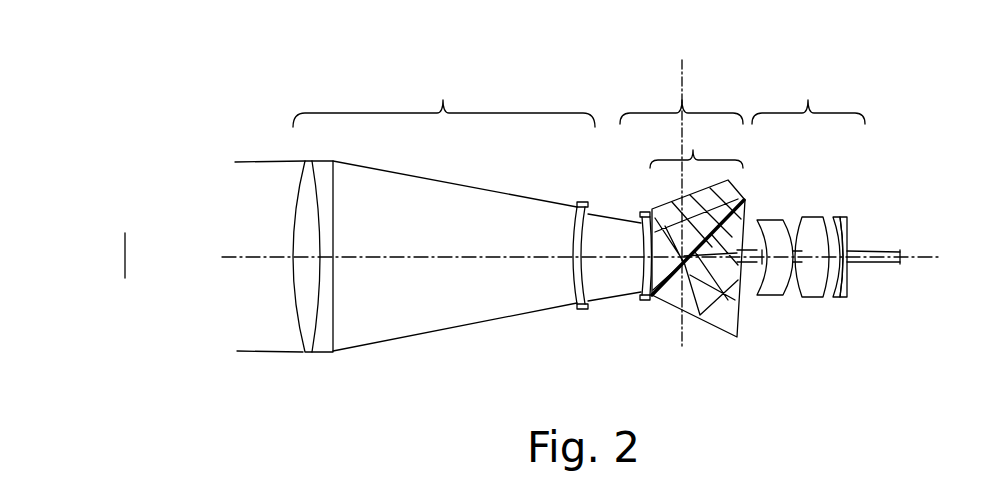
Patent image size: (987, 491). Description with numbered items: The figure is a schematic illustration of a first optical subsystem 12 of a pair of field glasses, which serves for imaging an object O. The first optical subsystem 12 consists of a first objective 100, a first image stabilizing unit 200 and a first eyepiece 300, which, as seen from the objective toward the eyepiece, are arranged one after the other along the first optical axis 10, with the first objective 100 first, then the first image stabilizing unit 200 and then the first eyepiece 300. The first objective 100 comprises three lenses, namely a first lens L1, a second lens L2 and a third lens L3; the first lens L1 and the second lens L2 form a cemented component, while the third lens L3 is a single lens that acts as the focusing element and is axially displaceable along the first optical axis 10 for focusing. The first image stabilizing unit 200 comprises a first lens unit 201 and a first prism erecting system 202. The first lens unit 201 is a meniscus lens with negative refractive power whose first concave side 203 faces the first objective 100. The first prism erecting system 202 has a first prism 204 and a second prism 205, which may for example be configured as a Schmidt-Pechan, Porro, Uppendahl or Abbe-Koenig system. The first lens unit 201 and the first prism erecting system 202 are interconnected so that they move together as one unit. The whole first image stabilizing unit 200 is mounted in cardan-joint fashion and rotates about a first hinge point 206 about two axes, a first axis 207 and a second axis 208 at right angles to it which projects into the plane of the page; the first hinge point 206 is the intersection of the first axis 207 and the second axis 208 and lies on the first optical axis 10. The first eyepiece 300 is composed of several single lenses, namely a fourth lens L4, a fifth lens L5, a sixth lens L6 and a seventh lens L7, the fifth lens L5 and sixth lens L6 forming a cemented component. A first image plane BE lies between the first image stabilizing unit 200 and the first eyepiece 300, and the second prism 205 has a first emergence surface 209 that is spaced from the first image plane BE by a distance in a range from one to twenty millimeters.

The object O is at (125, 247).
The first optical axis 10 is at (235, 257).
The first optical subsystem 12 is at (602, 72).
The first objective 100 is at (444, 100).
The first image stabilizing unit 200 is at (681, 101).
The first eyepiece 300 is at (808, 101).
The first lens unit 201 is at (641, 212).
The first prism erecting system 202 is at (696, 148).
The first concave side 203 is at (636, 301).
The first prism 204 is at (730, 193).
The second prism 205 is at (740, 326).
The first hinge point 206 is at (678, 292).
The first axis 207 is at (682, 74).
The second axis 208 is at (688, 302).
The first emergence surface 209 is at (743, 322).
The first image plane BE is at (750, 264).
The first lens L1 is at (307, 325).
The second lens L2 is at (323, 352).
The third lens L3 is at (576, 310).
The fourth lens L4 is at (767, 294).
The fifth lens L5 is at (807, 217).
The sixth lens L6 is at (820, 284).
The seventh lens L7 is at (843, 282).